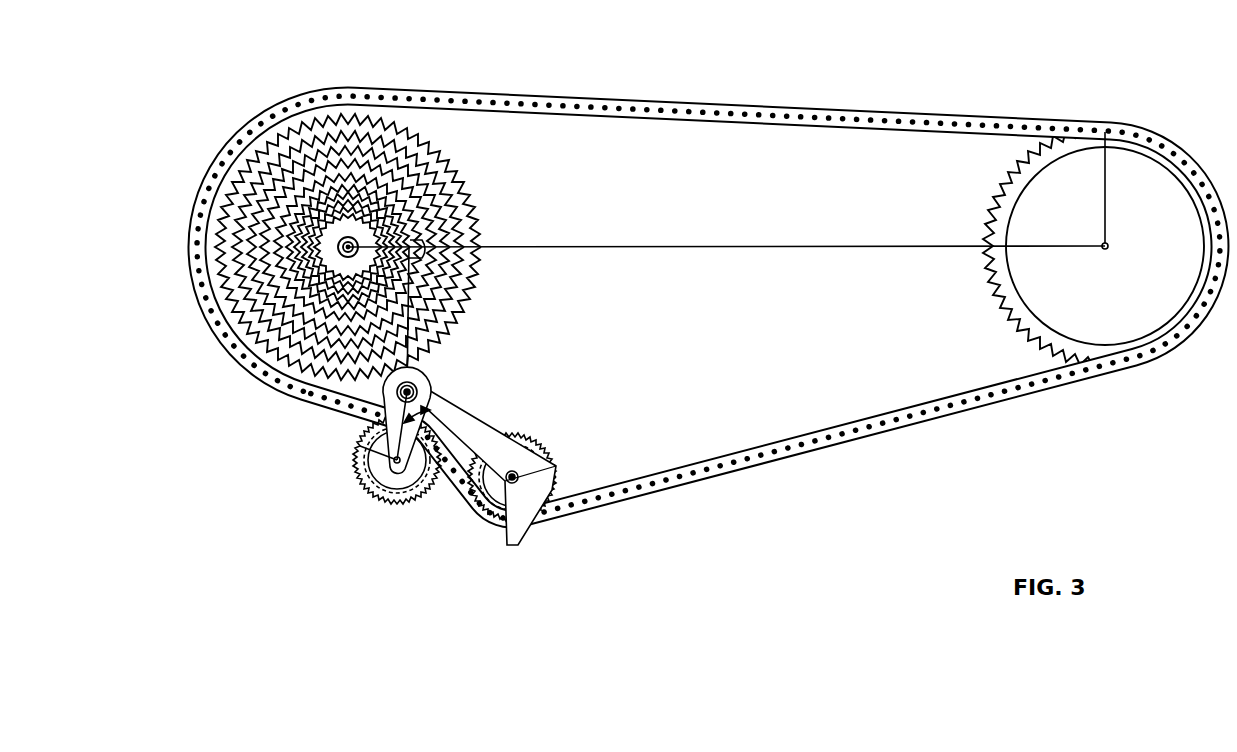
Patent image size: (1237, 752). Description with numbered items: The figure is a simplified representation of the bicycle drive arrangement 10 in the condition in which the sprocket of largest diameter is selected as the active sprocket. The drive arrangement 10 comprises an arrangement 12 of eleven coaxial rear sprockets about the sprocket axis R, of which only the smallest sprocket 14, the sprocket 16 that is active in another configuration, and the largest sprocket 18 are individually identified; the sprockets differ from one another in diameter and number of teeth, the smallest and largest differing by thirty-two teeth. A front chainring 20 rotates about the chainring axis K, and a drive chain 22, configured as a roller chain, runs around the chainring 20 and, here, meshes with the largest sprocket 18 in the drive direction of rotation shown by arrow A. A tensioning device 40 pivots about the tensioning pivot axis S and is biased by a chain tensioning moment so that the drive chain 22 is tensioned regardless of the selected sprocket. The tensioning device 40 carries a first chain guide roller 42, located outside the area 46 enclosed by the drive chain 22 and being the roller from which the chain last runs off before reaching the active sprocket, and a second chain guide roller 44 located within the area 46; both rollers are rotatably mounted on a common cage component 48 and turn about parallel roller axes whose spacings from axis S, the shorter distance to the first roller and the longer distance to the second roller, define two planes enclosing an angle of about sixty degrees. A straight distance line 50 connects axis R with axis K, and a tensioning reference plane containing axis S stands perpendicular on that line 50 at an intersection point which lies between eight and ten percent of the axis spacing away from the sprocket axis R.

The drive arrangement 10 is at (898, 528).
The arrangement of sprockets 12 is at (386, 204).
The sprocket having the smallest diameter 14 is at (350, 253).
The sprocket selected to be active 16 is at (404, 240).
The sprocket having the largest diameter 18 is at (483, 258).
The front chainring 20 is at (1017, 265).
The drive chain 22 is at (910, 114).
The tensioning device 40 is at (406, 449).
The first chain guide roller 42 is at (410, 480).
The second chain guide roller 44 is at (524, 452).
The area enclosed by the drive chain 46 is at (741, 300).
The cage component 48 is at (425, 405).
The straight distance line 50 is at (650, 247).